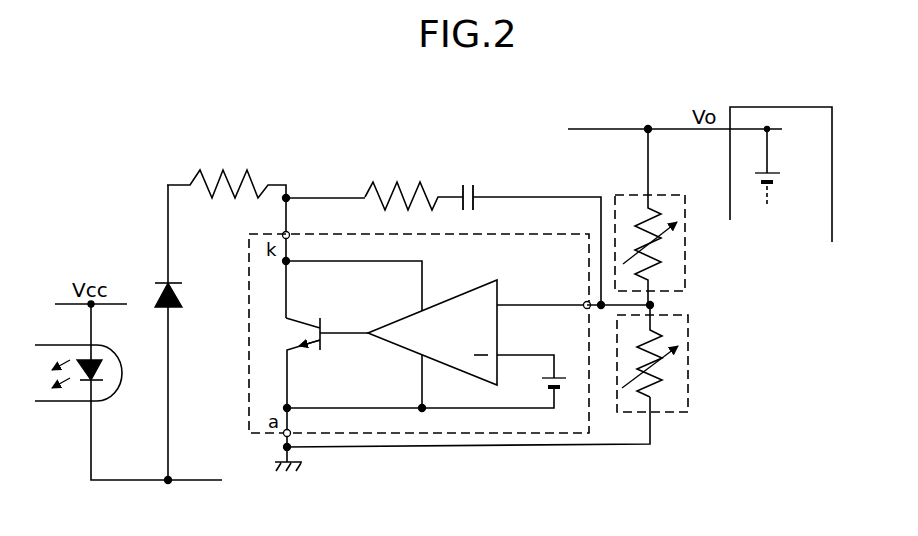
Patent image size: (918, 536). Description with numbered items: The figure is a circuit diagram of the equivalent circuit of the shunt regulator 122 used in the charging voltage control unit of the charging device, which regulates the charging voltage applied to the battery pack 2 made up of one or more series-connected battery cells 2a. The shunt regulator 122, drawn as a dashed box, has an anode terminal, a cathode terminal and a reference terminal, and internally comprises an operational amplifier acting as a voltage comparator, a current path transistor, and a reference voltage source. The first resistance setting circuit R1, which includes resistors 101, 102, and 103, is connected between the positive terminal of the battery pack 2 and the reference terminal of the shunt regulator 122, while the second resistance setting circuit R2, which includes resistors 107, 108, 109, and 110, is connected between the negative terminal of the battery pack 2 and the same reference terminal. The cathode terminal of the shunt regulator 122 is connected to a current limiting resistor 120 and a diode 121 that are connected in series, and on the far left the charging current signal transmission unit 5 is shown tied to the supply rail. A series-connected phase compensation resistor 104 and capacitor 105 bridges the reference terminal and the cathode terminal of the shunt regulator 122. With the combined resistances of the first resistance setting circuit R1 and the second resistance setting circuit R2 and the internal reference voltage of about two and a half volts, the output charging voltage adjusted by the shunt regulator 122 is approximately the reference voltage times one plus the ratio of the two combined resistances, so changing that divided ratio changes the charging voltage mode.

The battery pack 2 is at (781, 152).
The battery cell 2a is at (779, 176).
The charging current signal transmission unit 5 is at (58, 401).
The phase compensation resistor 104 is at (402, 182).
The capacitor 105 is at (472, 182).
The current limiting resistor 120 is at (228, 172).
The diode 121 is at (181, 291).
The shunt regulator 122 is at (248, 347).
The first resistance setting circuit R1 is at (733, 217).
The second resistance setting circuit R2 is at (756, 358).
The resistor 101 is at (733, 217).
The resistor 102 is at (733, 217).
The resistor 103 is at (686, 250).
The resistor 107 is at (756, 358).
The resistor 108 is at (756, 358).
The resistor 109 is at (756, 358).
The resistor 110 is at (688, 368).